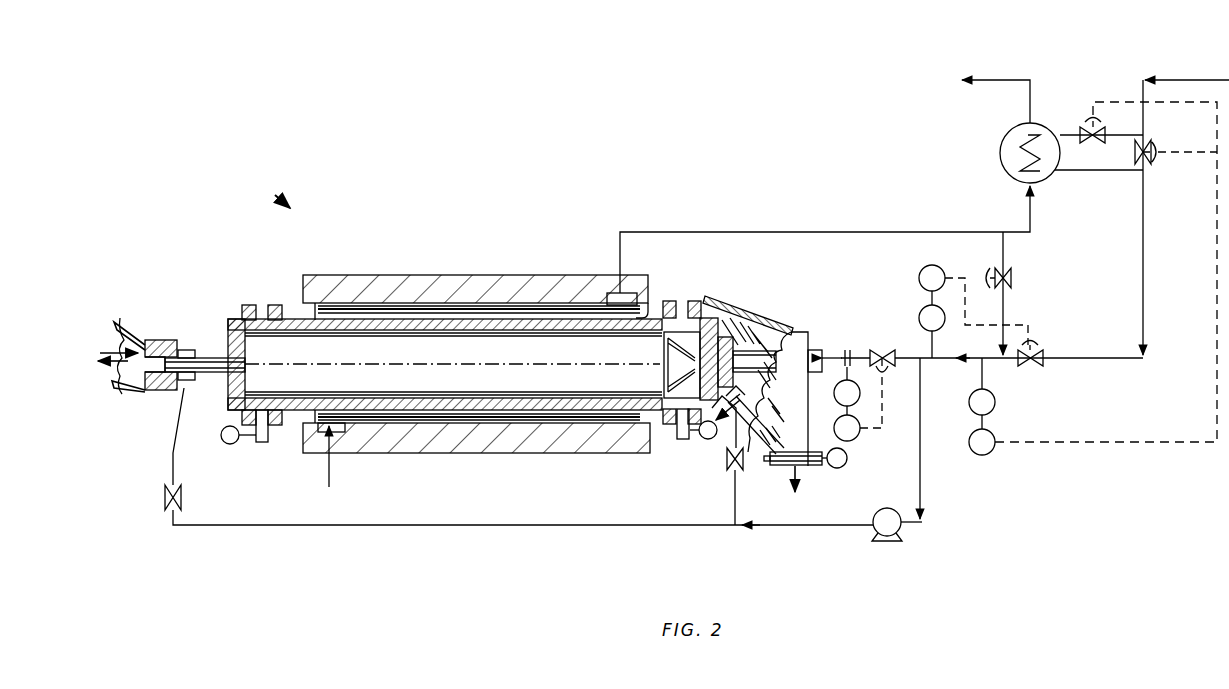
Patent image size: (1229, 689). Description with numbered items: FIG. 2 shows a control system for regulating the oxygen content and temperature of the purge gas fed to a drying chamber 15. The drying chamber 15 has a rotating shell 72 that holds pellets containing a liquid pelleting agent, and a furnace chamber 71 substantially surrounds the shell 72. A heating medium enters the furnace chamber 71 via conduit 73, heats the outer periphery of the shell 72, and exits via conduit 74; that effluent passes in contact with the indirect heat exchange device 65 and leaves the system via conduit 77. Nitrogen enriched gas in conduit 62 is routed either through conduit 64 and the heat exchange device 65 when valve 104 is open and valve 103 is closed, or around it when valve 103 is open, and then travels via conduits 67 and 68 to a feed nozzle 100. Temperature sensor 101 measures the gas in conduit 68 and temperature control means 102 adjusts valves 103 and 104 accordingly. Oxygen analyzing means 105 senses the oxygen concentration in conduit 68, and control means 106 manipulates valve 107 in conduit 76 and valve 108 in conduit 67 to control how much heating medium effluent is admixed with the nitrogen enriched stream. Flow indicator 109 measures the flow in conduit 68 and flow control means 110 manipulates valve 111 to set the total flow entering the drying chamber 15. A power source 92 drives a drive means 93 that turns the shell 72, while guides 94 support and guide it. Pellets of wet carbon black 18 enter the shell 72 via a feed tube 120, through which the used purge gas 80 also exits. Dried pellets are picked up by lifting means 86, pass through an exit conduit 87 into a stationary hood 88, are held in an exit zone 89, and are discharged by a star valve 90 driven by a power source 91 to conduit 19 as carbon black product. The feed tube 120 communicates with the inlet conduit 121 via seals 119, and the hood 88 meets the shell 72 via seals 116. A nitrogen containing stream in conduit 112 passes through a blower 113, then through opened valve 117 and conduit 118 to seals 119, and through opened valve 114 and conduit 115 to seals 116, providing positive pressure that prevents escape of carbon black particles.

The drying chamber 15 is at (290, 208).
The pellets of wet carbon black 18 is at (112, 326).
The conduit 19 is at (798, 472).
The conduit 62 is at (1198, 76).
The conduit 64 is at (1066, 132).
The indirect heat exchange device 65 is at (1000, 154).
The conduit 67 is at (1144, 252).
The conduit 68 is at (900, 354).
The furnace chamber 71 is at (532, 445).
The rotating shell 72 is at (566, 425).
The conduit 73 is at (329, 480).
The conduit 74 is at (618, 256).
The conduit 76 is at (1005, 250).
The conduit 77 is at (990, 76).
The used purge gas 80 is at (126, 392).
The lifting means 86 is at (664, 318).
The exit conduit 87 is at (746, 318).
The stationary hood 88 is at (804, 335).
The exit zone 89 is at (738, 433).
The valve 90 is at (776, 468).
The power source 91 is at (844, 464).
The power source 92 is at (230, 444).
The drive means 93 is at (276, 442).
The guides 94 is at (268, 302).
The feed nozzle 100 is at (826, 350).
The temperature sensor 101 is at (998, 398).
The temperature control means 102 is at (972, 454).
The control valve 103 is at (1156, 142).
The control valve 104 is at (1100, 148).
The oxygen analyzing means 105 is at (920, 312).
The control means 106 is at (942, 268).
The valve 107 is at (1012, 278).
The valve 108 is at (1038, 348).
The flow indicator 109 is at (834, 394).
The flow control means 110 is at (858, 432).
The valve 111 is at (884, 376).
The conduit 112 is at (922, 488).
The blower 113 is at (898, 538).
The valve 114 is at (722, 474).
The conduit 115 is at (742, 432).
The seals 116 is at (730, 340).
The valve 117 is at (181, 498).
The conduit 118 is at (172, 462).
The seals 119 is at (192, 348).
The feed tube 120 is at (248, 366).
The inlet conduit 121 is at (158, 340).